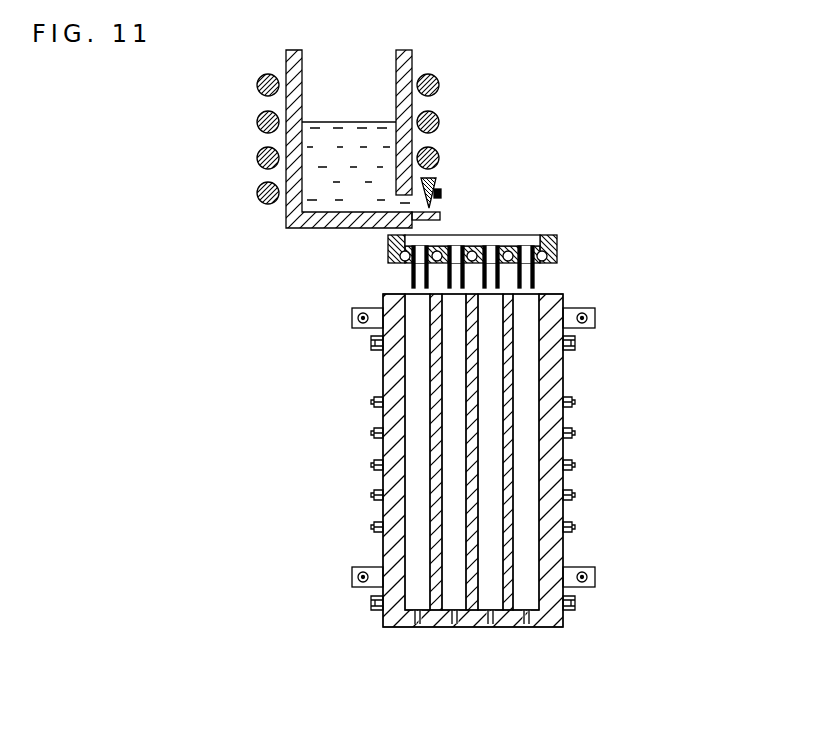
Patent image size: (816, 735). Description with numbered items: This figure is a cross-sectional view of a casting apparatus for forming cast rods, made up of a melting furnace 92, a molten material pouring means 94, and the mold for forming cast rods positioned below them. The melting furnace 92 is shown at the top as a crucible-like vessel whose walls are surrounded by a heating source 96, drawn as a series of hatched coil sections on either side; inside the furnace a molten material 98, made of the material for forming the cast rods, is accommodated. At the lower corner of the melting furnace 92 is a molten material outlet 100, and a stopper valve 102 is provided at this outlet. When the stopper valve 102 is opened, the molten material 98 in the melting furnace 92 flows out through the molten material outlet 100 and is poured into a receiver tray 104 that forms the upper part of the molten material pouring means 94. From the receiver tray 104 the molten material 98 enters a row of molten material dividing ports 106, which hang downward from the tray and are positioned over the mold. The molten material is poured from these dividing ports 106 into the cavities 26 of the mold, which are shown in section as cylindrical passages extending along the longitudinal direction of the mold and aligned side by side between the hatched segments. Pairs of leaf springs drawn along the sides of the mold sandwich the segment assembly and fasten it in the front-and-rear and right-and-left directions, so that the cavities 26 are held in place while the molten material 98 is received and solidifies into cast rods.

The melting furnace 92 is at (412, 62).
The molten material 98 is at (340, 122).
The heating source 96 is at (257, 86).
The stopper valve 102 is at (437, 178).
The molten material outlet 100 is at (440, 212).
The molten material pouring means 94 is at (529, 239).
The receiver tray 104 is at (548, 237).
The molten material dividing ports 106 is at (540, 280).
The cavities 26 is at (491, 496).